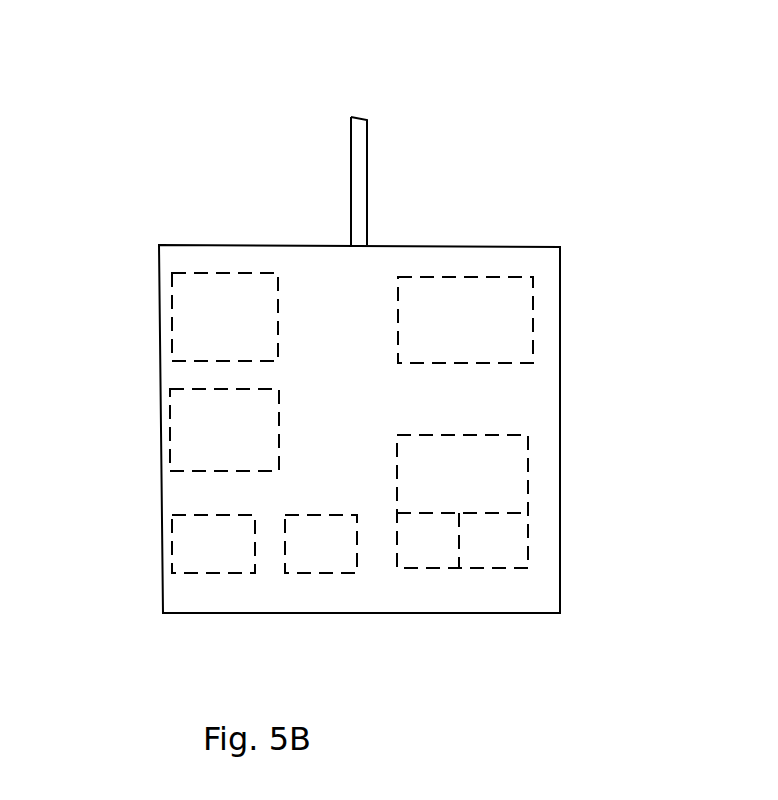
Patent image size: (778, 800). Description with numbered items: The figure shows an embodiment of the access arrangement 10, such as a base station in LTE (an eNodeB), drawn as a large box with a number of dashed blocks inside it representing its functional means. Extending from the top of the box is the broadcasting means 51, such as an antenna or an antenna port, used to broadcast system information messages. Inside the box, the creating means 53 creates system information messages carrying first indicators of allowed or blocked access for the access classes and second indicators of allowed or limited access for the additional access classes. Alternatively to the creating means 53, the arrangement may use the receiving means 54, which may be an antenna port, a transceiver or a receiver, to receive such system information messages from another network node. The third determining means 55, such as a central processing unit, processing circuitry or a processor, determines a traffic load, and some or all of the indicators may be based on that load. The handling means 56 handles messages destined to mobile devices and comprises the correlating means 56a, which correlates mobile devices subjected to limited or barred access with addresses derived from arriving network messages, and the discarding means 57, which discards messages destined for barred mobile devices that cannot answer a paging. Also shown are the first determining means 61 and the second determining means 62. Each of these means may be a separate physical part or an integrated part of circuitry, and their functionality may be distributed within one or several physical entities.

The access arrangement 10 is at (575, 118).
The broadcasting means 51 is at (367, 157).
The creating means 53 is at (533, 277).
The receiving means 54 is at (170, 422).
The third determining means 55 is at (172, 273).
The handling means 56 is at (528, 435).
The correlating means 56a is at (529, 537).
The discarding means 57 is at (459, 568).
The first determining means 61 is at (172, 573).
The second determining means 62 is at (340, 573).